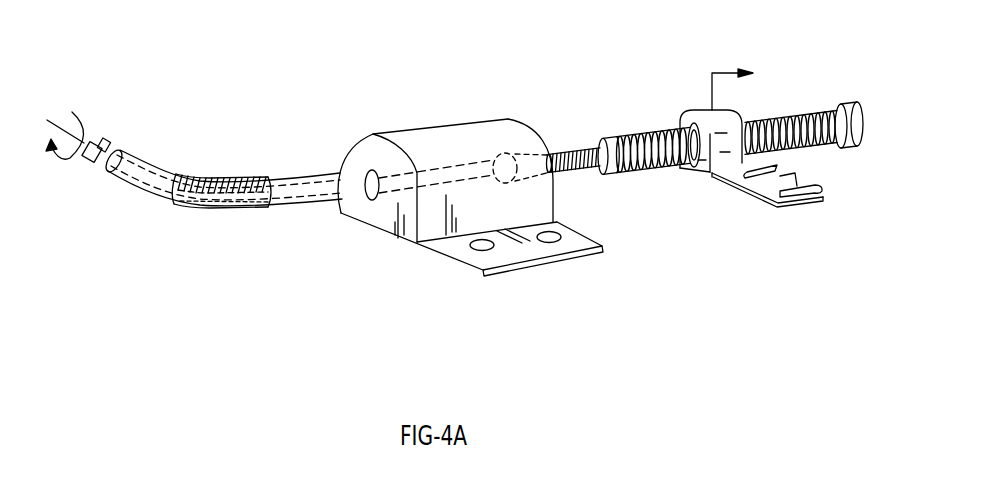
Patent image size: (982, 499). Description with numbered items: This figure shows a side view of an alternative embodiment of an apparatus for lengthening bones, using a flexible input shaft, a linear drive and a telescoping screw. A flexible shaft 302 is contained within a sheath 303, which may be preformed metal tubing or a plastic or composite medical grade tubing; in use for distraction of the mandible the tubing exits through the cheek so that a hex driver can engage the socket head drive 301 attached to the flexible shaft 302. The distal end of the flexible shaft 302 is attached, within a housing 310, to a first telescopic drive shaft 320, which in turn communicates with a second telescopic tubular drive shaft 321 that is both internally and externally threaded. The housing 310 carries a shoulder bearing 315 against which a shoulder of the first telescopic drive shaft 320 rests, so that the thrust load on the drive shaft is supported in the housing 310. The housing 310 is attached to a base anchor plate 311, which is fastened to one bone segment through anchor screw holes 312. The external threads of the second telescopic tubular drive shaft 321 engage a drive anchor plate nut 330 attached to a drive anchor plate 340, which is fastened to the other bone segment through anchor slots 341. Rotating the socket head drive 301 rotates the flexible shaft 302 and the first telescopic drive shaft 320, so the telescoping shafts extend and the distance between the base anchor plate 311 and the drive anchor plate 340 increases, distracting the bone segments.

The socket head drive 301 is at (88, 153).
The flexible shaft 302 is at (152, 172).
The sheath 303 is at (220, 180).
The housing 310 is at (405, 137).
The base anchor plate 311 is at (440, 252).
The anchor screw holes 312 is at (482, 248).
The shoulder bearing 315 is at (510, 153).
The first telescopic drive shaft 320 is at (565, 150).
The second telescopic tubular drive shaft 321 is at (640, 133).
The drive anchor plate nut 330 is at (730, 120).
The drive anchor plate 340 is at (752, 190).
The anchor slots 341 is at (777, 172).